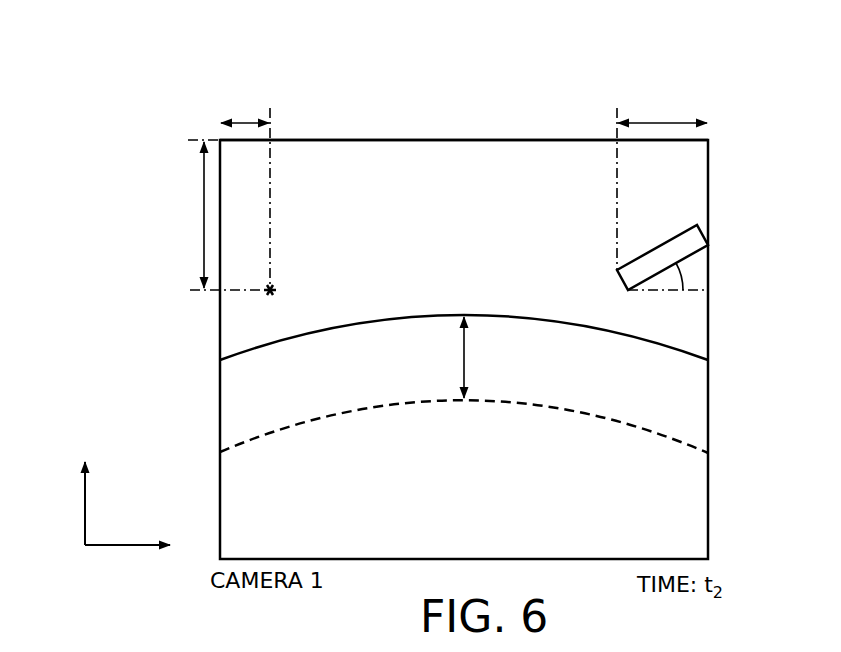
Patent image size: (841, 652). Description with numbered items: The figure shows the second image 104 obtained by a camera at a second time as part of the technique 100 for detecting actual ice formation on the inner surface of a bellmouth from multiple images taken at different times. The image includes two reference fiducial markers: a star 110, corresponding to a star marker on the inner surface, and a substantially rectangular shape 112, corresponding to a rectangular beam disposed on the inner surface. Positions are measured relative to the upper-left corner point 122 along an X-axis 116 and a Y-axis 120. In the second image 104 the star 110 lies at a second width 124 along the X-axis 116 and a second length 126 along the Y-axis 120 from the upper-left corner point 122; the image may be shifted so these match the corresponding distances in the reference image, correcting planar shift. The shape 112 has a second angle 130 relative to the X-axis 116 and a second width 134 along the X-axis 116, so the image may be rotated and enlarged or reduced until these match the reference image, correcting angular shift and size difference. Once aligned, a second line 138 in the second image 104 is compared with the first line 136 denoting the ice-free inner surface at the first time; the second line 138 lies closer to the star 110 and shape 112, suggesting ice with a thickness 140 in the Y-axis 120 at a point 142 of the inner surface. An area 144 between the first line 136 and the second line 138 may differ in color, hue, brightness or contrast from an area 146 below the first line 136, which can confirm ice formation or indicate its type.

The technique 100 is at (126, 132).
The second image 104 is at (506, 78).
The star 110 is at (278, 289).
The substantially rectangular shape 112 is at (702, 224).
The X-axis 116 is at (131, 547).
The Y-axis 120 is at (84, 527).
The upper-left corner point 122 is at (418, 138).
The second width 124 is at (246, 121).
The second length 126 is at (203, 200).
The second angle 130 is at (680, 263).
The second width 134 is at (688, 121).
The first line 136 is at (573, 407).
The second line 138 is at (522, 316).
The thickness 140 is at (461, 358).
The point 142 is at (464, 407).
The area 144 is at (690, 398).
The area 146 is at (685, 518).